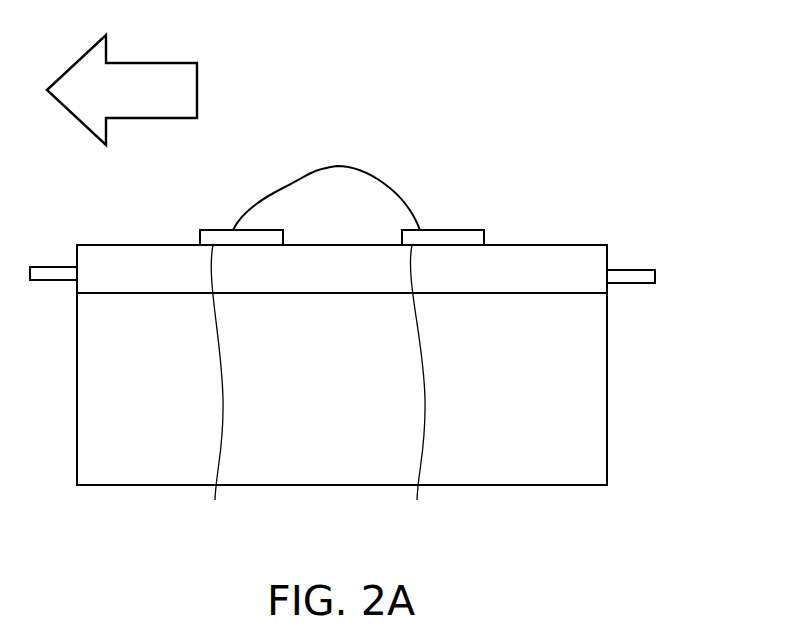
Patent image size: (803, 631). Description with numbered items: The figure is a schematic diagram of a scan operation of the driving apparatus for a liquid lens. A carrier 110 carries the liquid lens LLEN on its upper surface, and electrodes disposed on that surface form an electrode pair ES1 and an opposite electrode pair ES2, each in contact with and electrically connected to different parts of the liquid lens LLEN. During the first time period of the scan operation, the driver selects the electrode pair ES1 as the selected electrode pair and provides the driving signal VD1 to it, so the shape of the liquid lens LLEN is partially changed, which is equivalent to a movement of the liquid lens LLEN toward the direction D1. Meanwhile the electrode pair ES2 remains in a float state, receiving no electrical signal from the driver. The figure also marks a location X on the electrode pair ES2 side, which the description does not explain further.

The direction D1 is at (122, 87).
The carrier 110 is at (607, 358).
The driving signal VD1 is at (215, 235).
The pad / connection point X is at (458, 239).
The liquid lens LLEN is at (337, 163).
The electrode pair ES1 is at (208, 389).
The electrode pair ES2 is at (412, 389).